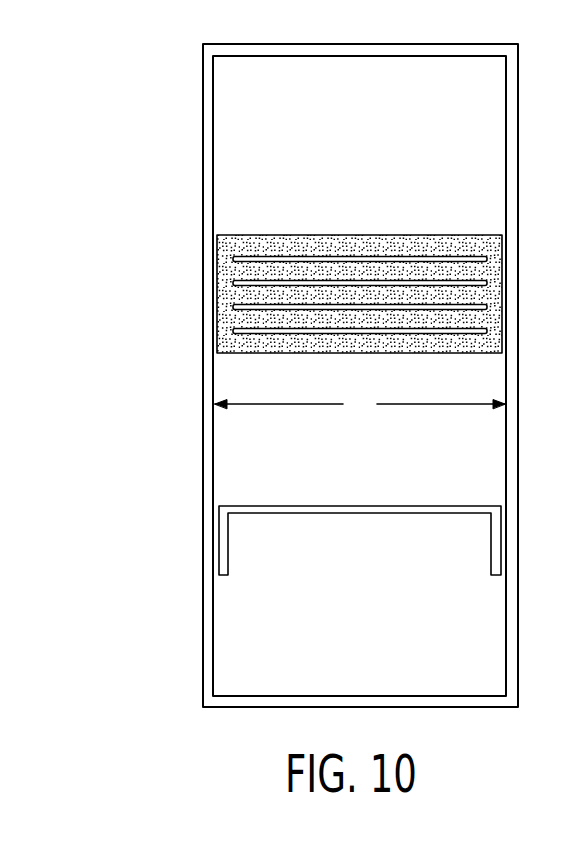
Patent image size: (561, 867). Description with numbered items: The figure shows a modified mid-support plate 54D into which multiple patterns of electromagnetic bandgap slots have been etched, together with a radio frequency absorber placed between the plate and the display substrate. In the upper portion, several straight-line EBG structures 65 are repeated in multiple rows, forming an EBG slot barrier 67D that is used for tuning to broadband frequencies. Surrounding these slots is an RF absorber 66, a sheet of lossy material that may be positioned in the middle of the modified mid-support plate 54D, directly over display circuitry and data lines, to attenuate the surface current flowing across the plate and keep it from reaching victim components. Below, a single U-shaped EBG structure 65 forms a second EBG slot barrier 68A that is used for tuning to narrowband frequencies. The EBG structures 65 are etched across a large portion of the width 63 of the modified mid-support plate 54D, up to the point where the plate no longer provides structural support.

The modified mid-support plate 54D is at (203, 124).
The RF absorber 66 is at (238, 242).
The EBG slot barrier 67D is at (185, 255).
The EBG structure 65 is at (301, 378).
The second EBG slot barrier 68A is at (185, 503).
The width 63 is at (360, 407).